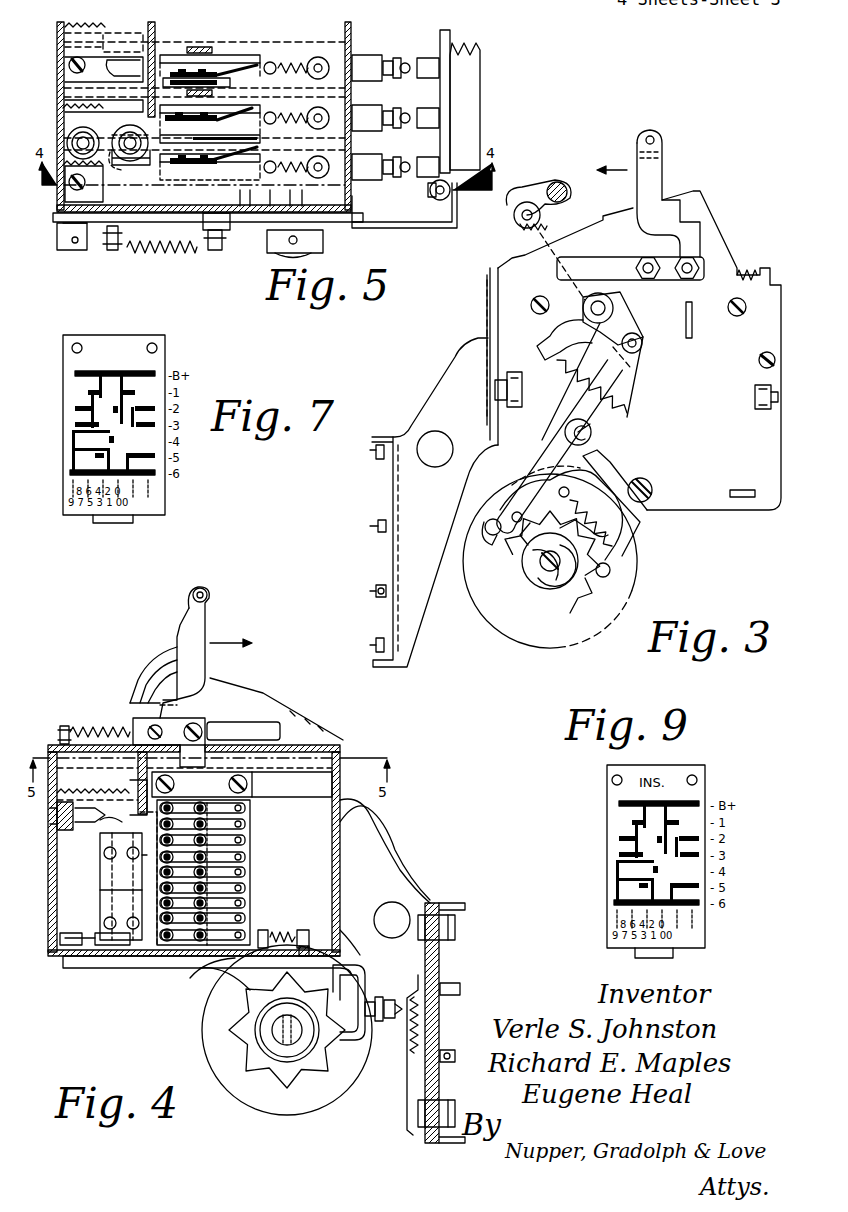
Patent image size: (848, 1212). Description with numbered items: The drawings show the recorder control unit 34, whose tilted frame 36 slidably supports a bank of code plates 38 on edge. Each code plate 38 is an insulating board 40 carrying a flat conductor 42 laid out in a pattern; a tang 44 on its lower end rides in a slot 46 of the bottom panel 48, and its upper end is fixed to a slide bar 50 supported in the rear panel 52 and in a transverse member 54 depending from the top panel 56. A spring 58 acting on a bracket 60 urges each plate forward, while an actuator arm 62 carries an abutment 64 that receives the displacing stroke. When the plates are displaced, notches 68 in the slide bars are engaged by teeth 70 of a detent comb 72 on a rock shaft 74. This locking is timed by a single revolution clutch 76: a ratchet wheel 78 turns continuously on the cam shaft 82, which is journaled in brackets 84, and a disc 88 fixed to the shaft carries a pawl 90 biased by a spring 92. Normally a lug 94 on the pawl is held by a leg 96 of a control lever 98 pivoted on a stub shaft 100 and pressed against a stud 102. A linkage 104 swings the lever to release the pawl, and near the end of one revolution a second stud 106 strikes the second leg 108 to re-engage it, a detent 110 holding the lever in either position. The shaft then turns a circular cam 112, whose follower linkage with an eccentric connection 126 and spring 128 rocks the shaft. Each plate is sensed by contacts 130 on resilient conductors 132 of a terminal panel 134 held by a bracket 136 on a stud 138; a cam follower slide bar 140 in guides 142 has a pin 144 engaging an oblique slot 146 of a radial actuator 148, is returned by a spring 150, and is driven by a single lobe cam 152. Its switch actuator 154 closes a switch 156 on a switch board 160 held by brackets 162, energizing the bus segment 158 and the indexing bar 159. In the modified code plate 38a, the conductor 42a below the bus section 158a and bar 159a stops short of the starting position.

In FIG. 3, the recorder control unit 34 is at (692, 530).
In FIG. 4, the recorder control unit 34 is at (407, 815).
In FIG. 3, the tilted frame 36 is at (495, 268).
In FIG. 4, the tilted frame 36 is at (342, 737).
In FIG. 5, the code plate 38 is at (215, 53).
In FIG. 7, the code plate 38 is at (168, 508).
In FIG. 4, the code plate 38 is at (250, 831).
In FIG. 9, the modified code plate 38a is at (686, 861).
In FIG. 7, the code plate board 40 is at (110, 338).
In FIG. 4, the code plate board 40 is at (250, 885).
In FIG. 7, the flat conductor 42 is at (148, 370).
In FIG. 9, the modified conductor pattern 42a is at (630, 853).
In FIG. 7, the tang 44 is at (113, 524).
In FIG. 4, the tang 44 is at (62, 938).
In FIG. 4, the slot 46 is at (222, 970).
In FIG. 4, the bottom panel 48 is at (60, 938).
In FIG. 4, the slide bar 50 is at (312, 790).
In FIG. 4, the rear panel 52 is at (342, 805).
In FIG. 4, the medial transverse member 54 is at (138, 782).
In FIG. 4, the top panel 56 is at (60, 736).
In FIG. 3, the spring 58 is at (746, 272).
In FIG. 4, the spring 58 is at (94, 725).
In FIG. 4, the bracket 60 is at (175, 722).
In FIG. 4, the actuator arm 62 is at (184, 622).
In FIG. 4, the actuator abutment 64 is at (207, 591).
In FIG. 4, the notches 68 is at (85, 800).
In FIG. 4, the detent teeth 70 is at (105, 818).
In FIG. 4, the detent comb 72 is at (85, 818).
In FIG. 5, the rock shaft 74 is at (68, 250).
In FIG. 4, the rock shaft 74 is at (60, 823).
In FIG. 3, the single revolution clutch 76 is at (636, 572).
In FIG. 3, the ratchet wheel 78 is at (557, 182).
In FIG. 5, the cam shaft 82 is at (312, 256).
In FIG. 3, the cam shaft 82 is at (550, 573).
In FIG. 4, the cam shaft 82 is at (272, 1032).
In FIG. 4, the brackets 84 is at (222, 990).
In FIG. 3, the disc 88 is at (620, 566).
In FIG. 4, the disc 88 is at (320, 1095).
In FIG. 3, the pawl 90 is at (538, 480).
In FIG. 3, the spring 92 is at (575, 500).
In FIG. 3, the abutment lug 94 is at (500, 500).
In FIG. 3, the lever leg 96 is at (510, 480).
In FIG. 3, the control lever 98 is at (605, 434).
In FIG. 3, the stub shaft 100 is at (570, 425).
In FIG. 3, the abutment stud 102 is at (490, 535).
In FIG. 3, the connecting linkage 104 is at (520, 231).
In FIG. 3, the second stud 106 is at (609, 578).
In FIG. 3, the second leg 108 is at (637, 520).
In FIG. 3, the spring-biased detent 110 is at (560, 334).
In FIG. 5, the circular cam 112 is at (252, 230).
In FIG. 5, the eccentric connection 126 is at (110, 252).
In FIG. 5, the spring 128 is at (150, 255).
In FIG. 5, the contacts 130 is at (273, 62).
In FIG. 4, the contacts 130 is at (247, 810).
In FIG. 5, the resilient conductors 132 is at (240, 62).
In FIG. 4, the resilient conductors 132 is at (243, 915).
In FIG. 5, the terminal panel 134 is at (197, 55).
In FIG. 4, the terminal panel 134 is at (150, 912).
In FIG. 5, the bracket 136 is at (132, 126).
In FIG. 4, the bracket 136 is at (112, 897).
In FIG. 5, the support stud 138 is at (137, 146).
In FIG. 4, the support stud 138 is at (118, 880).
In FIG. 5, the cam follower slide bar 140 is at (362, 56).
In FIG. 4, the cam follower slide bar 140 is at (124, 968).
In FIG. 4, the guides 142 is at (335, 968).
In FIG. 5, the pin 144 is at (90, 148).
In FIG. 5, the oblique slot 146 is at (72, 136).
In FIG. 5, the radial actuator 148 is at (100, 124).
In FIG. 5, the spring 150 is at (300, 62).
In FIG. 4, the spring 150 is at (285, 930).
In FIG. 4, the single lobe cam 152 is at (330, 1048).
In FIG. 4, the switch actuator 154 is at (395, 1020).
In FIG. 4, the switch 156 is at (445, 997).
In FIG. 7, the bus bar segment 158 is at (85, 372).
In FIG. 9, the B+ bus section 158a is at (630, 792).
In FIG. 7, the indexing clutch energizing bar 159 is at (150, 468).
In FIG. 9, the indexing clutch energizing bar 159a is at (628, 911).
In FIG. 4, the switch board 160 is at (440, 1028).
In FIG. 3, the brackets 162 is at (393, 555).
In FIG. 4, the brackets 162 is at (398, 870).